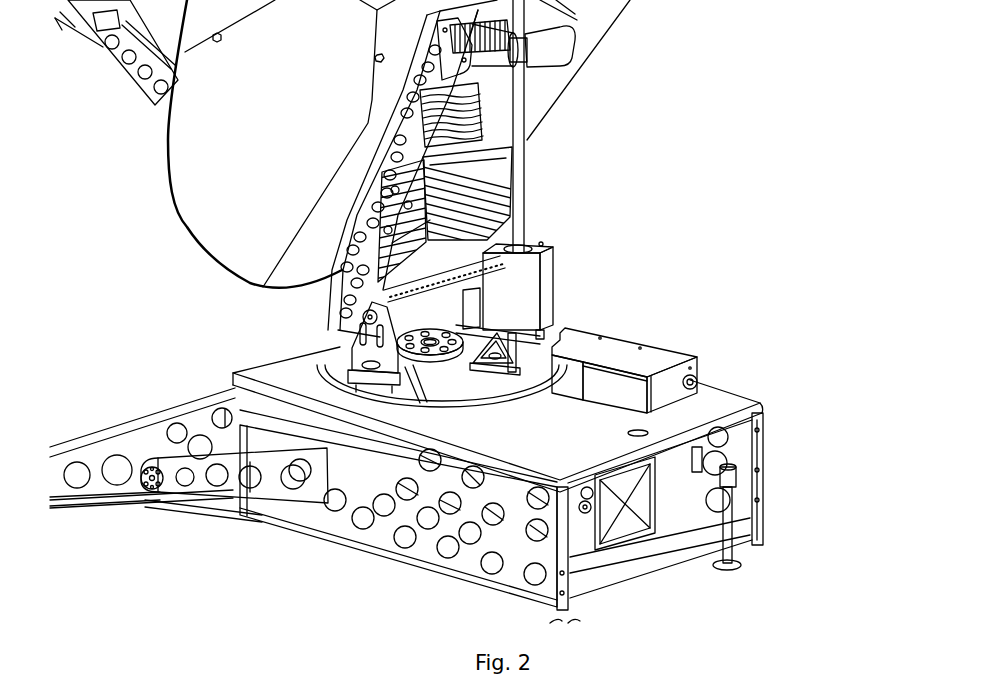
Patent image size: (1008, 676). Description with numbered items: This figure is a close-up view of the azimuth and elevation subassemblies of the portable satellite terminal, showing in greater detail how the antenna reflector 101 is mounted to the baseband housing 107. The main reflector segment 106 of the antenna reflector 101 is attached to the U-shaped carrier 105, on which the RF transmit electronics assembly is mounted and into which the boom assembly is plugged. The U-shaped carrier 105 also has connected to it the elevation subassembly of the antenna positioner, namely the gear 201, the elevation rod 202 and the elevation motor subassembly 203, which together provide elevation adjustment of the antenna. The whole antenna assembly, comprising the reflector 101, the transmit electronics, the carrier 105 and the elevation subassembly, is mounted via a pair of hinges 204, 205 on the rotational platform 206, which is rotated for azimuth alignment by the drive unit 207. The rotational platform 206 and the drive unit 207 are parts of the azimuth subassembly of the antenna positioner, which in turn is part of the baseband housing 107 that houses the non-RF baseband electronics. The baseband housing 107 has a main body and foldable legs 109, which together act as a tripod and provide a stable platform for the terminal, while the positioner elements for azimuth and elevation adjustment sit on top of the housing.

The antenna reflector 101 is at (166, 197).
The U-shaped carrier 105 is at (345, 286).
The main segment of the antenna reflector 106 is at (317, 236).
The baseband housing 107 is at (741, 377).
The foldable legs 109 is at (110, 510).
The gear 201 is at (547, 38).
The elevation rod 202 is at (545, 120).
The elevation motor subassembly 203 is at (570, 248).
The hinge 204 is at (346, 384).
The hinge 205 is at (520, 377).
The rotational platform 206 is at (404, 419).
The drive unit 207 is at (661, 336).